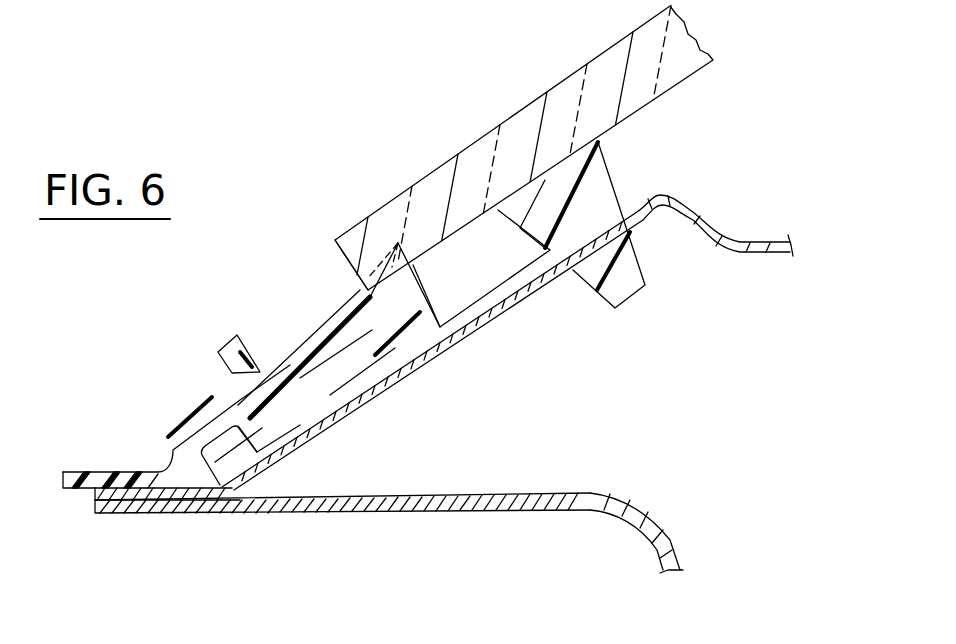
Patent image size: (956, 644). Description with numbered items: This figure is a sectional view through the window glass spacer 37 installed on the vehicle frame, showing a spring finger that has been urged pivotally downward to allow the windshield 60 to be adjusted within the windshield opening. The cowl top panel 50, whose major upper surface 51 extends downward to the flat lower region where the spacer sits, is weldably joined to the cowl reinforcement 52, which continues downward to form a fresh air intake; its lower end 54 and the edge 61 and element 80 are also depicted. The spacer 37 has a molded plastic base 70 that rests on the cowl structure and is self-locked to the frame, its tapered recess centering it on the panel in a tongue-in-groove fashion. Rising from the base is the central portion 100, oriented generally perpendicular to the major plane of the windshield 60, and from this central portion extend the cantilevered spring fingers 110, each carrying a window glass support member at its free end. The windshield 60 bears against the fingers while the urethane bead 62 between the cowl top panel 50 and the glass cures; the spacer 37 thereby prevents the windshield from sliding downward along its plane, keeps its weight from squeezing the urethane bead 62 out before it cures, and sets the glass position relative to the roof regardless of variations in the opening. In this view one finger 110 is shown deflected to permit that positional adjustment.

The window glass spacer 37 is at (162, 355).
The cowl top panel 50 is at (423, 368).
The major upper surface 51 is at (377, 379).
The cowl reinforcement 52 is at (448, 494).
The curved end 54 is at (682, 558).
The windshield 60 is at (425, 172).
The board edge 61 is at (337, 257).
The urethane bead 62 is at (613, 183).
The base 70 is at (107, 470).
The spacer block 80 is at (437, 297).
The central portion 100 is at (200, 400).
The spring fingers 110 is at (290, 342).